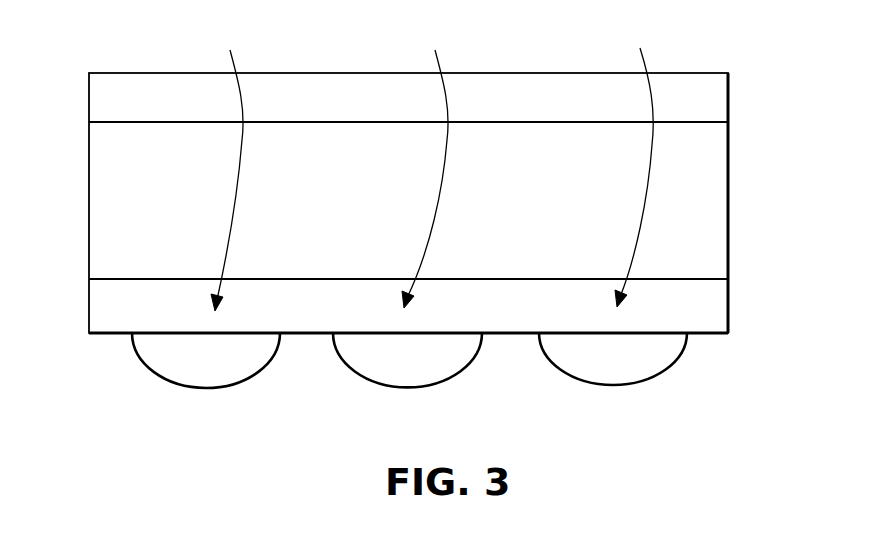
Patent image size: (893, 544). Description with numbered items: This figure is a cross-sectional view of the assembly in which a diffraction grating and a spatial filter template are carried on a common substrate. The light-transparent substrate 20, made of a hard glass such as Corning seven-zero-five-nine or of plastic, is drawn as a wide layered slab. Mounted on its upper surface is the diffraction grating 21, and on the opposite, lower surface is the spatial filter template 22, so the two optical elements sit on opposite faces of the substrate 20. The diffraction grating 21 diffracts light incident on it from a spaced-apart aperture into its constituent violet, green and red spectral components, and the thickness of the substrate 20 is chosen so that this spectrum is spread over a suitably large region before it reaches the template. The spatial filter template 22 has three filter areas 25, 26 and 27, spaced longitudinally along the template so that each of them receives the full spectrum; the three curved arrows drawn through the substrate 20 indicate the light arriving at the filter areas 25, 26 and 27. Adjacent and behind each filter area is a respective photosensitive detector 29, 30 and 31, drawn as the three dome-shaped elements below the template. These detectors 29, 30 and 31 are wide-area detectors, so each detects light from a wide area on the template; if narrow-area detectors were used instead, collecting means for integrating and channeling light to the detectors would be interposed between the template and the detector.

The light-transparent substrate 20 is at (717, 199).
The diffraction grating 21 is at (713, 94).
The spatial filter template 22 is at (715, 303).
The filter area 25 is at (229, 167).
The filter area 26 is at (428, 165).
The filter area 27 is at (636, 164).
The photosensitive detector 29 is at (255, 372).
The photosensitive detector 30 is at (453, 374).
The photosensitive detector 31 is at (657, 373).